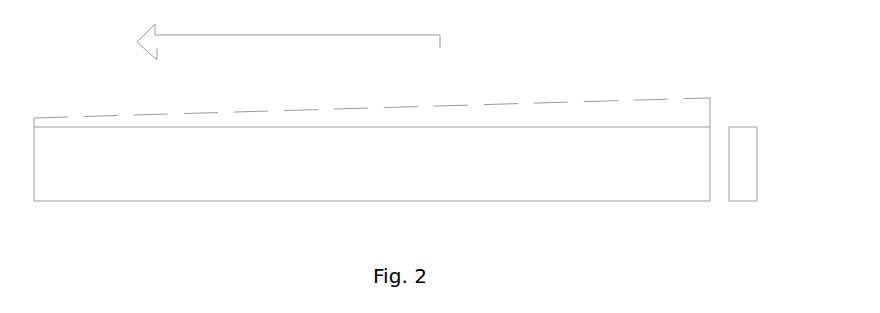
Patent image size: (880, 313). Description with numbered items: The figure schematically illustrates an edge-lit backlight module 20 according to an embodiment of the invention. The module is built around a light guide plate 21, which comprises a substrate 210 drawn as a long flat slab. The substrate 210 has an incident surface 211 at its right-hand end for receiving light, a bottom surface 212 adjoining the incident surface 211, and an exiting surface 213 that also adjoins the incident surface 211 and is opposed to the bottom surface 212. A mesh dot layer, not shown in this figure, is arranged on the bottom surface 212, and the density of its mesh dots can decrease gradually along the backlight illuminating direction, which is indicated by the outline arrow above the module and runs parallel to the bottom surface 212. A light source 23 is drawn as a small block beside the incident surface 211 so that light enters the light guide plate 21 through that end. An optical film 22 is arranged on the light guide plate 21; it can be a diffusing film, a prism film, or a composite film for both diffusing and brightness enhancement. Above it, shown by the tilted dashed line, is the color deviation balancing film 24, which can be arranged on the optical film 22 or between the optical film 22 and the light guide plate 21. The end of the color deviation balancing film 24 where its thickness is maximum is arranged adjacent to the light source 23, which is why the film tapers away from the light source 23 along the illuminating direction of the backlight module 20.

The edge-lit backlight module 20 is at (608, 76).
The light guide plate 21 is at (563, 193).
The substrate 210 is at (140, 163).
The incident surface 211 is at (710, 162).
The bottom surface 212 is at (263, 201).
The exiting surface 213 is at (227, 142).
The optical film 22 is at (345, 137).
The light source 23 is at (747, 138).
The color deviation balancing film 24 is at (475, 120).